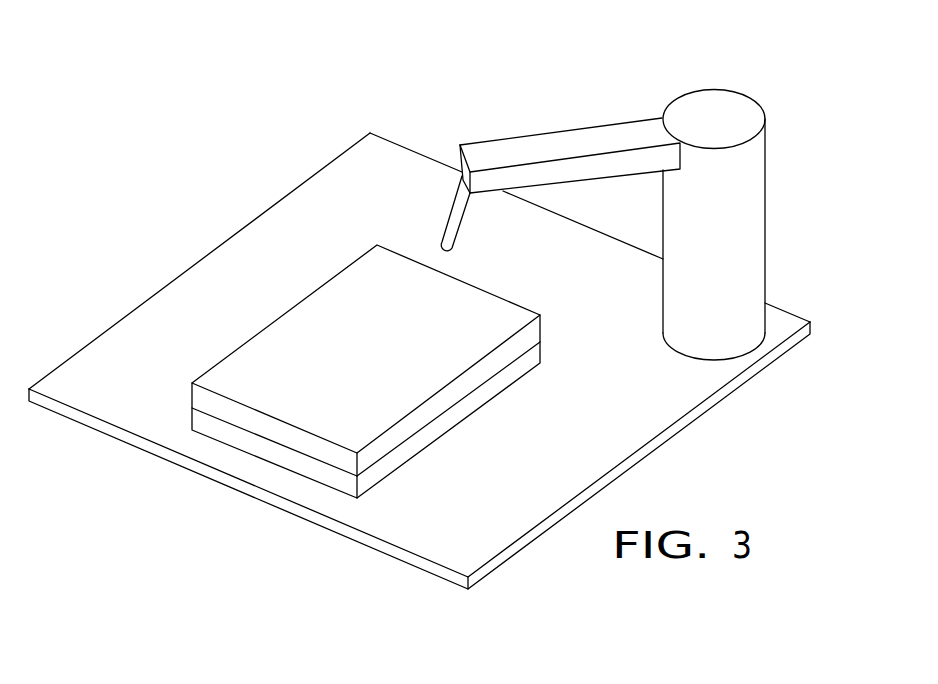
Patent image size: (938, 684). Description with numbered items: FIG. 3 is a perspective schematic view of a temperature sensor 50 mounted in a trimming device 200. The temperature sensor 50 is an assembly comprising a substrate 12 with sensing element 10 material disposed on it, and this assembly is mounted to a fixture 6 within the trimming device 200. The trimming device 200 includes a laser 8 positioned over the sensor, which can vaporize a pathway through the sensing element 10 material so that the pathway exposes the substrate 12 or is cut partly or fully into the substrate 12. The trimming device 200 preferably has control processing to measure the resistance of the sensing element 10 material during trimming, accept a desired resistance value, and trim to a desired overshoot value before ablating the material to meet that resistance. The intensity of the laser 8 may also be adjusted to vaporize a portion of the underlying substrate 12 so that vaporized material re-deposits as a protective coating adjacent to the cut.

The fixture 6 is at (130, 332).
The laser 8 is at (728, 102).
The sensing element 10 is at (412, 371).
The substrate 12 is at (530, 355).
The temperature sensor 50 is at (305, 330).
The trimming device 200 is at (668, 205).